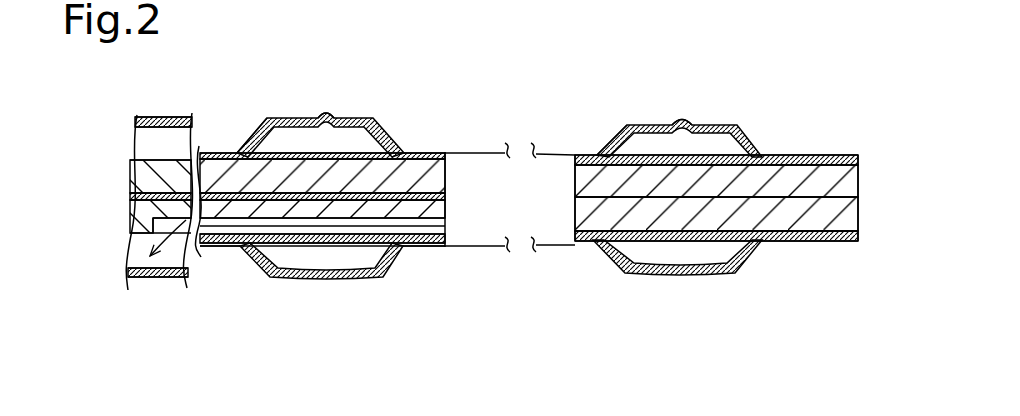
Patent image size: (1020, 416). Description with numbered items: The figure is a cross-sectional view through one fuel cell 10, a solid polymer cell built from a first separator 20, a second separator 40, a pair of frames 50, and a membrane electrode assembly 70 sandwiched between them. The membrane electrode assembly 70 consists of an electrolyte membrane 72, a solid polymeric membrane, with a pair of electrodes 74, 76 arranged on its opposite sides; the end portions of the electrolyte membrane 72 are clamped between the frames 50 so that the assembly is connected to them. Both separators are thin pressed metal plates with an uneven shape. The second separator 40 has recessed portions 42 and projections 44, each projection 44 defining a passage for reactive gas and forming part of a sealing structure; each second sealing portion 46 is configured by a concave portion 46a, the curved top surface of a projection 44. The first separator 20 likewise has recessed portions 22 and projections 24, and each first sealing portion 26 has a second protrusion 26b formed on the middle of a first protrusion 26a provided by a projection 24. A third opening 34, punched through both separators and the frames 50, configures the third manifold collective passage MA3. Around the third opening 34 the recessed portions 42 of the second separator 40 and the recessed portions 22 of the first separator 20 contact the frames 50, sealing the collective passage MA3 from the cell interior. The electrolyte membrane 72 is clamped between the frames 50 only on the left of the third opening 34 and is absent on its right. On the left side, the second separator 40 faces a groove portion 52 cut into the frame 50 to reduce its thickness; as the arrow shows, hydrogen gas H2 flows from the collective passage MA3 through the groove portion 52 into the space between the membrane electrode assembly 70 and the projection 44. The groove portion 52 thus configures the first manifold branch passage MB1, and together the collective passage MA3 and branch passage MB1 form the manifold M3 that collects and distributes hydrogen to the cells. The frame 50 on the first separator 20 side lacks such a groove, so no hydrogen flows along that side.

The fuel cell 10 is at (862, 50).
The first separator 20 is at (458, 114).
The recessed portions 22 is at (437, 153).
The projections 24 is at (378, 120).
The first sealing portions 26 is at (359, 77).
The first protrusion 26a is at (265, 120).
The second protrusion 26b is at (323, 113).
The third opening 34 is at (519, 134).
The second separator 40 is at (422, 287).
The recessed portions 42 is at (407, 250).
The projections 44 is at (160, 282).
The second sealing portions 46 is at (273, 318).
The concave portion 46a is at (305, 284).
The frames 50 is at (446, 170).
The groove portion 52 is at (450, 248).
The membrane electrode assembly 70 is at (82, 155).
The electrolyte membrane 72 is at (132, 193).
The electrode 74 is at (132, 163).
The electrode 76 is at (133, 223).
The hydrogen gas H2 is at (448, 228).
The first manifold branch passage MB1 is at (503, 282).
The third manifold collective passage MA3 is at (559, 282).
The manifold M3 is at (594, 292).